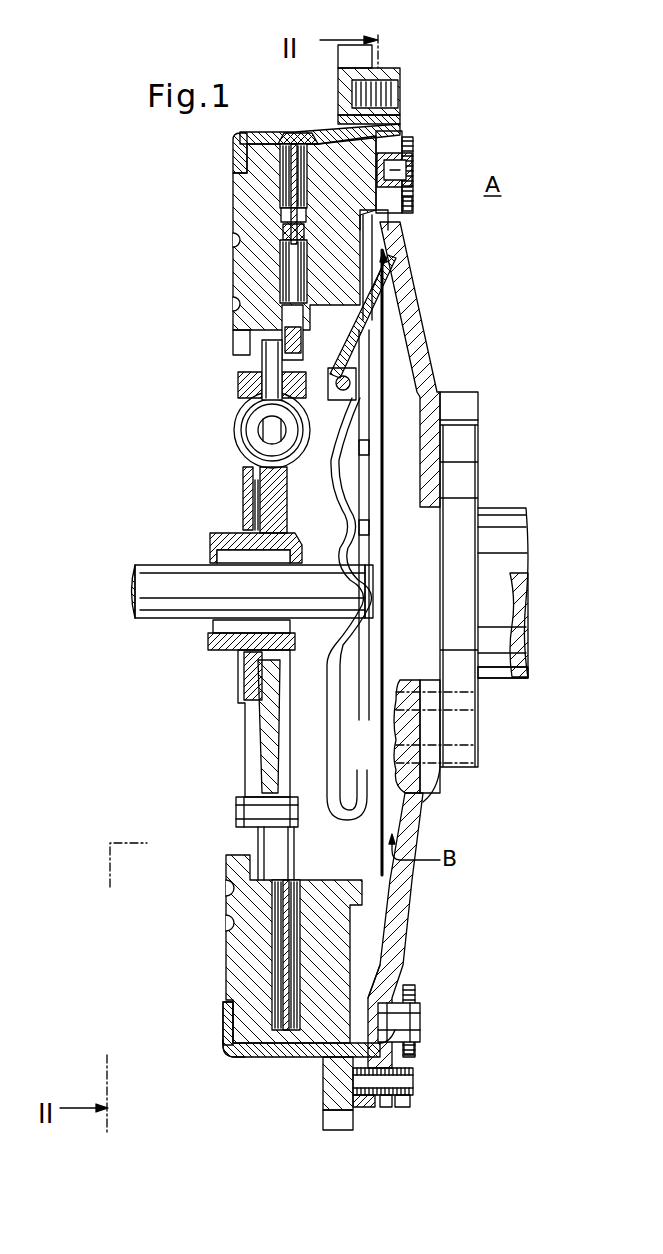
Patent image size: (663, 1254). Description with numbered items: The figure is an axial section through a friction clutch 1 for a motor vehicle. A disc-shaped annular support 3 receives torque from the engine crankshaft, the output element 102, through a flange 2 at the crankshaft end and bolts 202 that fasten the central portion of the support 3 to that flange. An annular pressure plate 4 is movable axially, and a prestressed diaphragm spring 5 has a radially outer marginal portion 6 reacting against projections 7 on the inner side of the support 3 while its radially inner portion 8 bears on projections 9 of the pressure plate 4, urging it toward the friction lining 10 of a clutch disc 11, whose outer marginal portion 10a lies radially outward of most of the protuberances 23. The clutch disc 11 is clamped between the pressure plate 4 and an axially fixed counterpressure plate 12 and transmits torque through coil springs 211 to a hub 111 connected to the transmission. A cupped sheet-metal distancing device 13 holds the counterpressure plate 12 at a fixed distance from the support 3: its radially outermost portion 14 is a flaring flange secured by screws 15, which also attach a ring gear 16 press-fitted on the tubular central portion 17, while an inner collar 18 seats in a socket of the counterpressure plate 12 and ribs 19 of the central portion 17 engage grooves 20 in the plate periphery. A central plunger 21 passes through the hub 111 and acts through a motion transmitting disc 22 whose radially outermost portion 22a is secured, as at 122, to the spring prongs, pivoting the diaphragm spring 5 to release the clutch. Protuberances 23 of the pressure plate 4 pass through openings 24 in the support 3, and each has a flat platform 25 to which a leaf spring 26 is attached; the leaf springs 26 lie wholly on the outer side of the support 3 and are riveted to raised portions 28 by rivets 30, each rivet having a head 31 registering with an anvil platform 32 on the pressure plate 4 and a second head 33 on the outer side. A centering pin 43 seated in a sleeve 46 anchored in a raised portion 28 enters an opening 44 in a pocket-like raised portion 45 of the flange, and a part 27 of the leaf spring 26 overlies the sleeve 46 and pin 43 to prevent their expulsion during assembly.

The friction clutch 1 is at (263, 74).
The flange 2 is at (460, 532).
The support 3 is at (426, 395).
The pressure plate 4 is at (375, 298).
The diaphragm spring 5 is at (385, 264).
The radially outer marginal portion 6 is at (392, 240).
The projections 7 is at (388, 232).
The radially inner portion 8 is at (346, 279).
The projections 9 is at (385, 335).
The friction lining 10 is at (290, 1043).
The outer marginal portion 10a is at (300, 128).
The clutch disc 11 is at (270, 745).
The counterpressure plate 12 is at (235, 868).
The distancing device 13 is at (318, 1055).
The radially outermost portion 14 is at (400, 72).
The screws 15 is at (348, 112).
The ring gear 16 is at (350, 72).
The central portion 17 is at (303, 131).
The collar 18 is at (233, 152).
The ribs 19 is at (234, 1058).
The grooves 20 is at (231, 1015).
The plunger 21 is at (170, 582).
The motion transmitting disc 22 is at (256, 678).
The radially outermost portion 22a is at (337, 820).
The protuberances 23 is at (420, 143).
The openings 24 is at (400, 130).
The platform 25 is at (423, 161).
The leaf springs 26 is at (412, 204).
The part 27 is at (352, 1080).
The raised portions 28 is at (394, 958).
The rivets 30 is at (412, 1016).
The head 31 is at (420, 1031).
The platform 32 is at (380, 992).
The head 33 is at (418, 1006).
The centering pin 43 is at (410, 1091).
The opening 44 is at (388, 1107).
The raised portion 45 is at (366, 1098).
The sleeve 46 is at (413, 1072).
The output element 102 is at (497, 680).
The hub 111 is at (226, 533).
The securing location 122 is at (341, 376).
The bolts 202 is at (420, 800).
The coil springs 211 is at (235, 424).